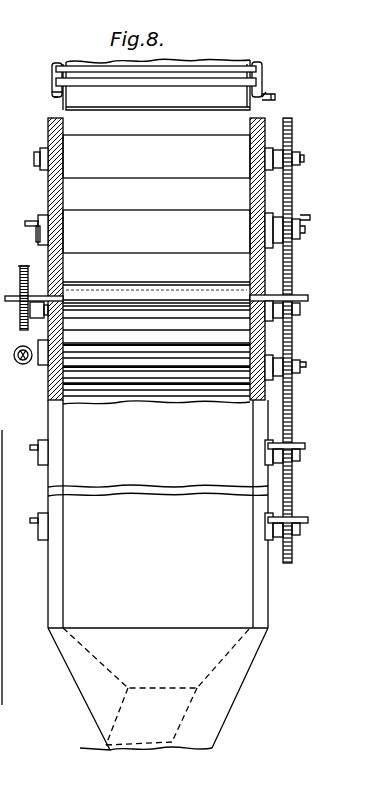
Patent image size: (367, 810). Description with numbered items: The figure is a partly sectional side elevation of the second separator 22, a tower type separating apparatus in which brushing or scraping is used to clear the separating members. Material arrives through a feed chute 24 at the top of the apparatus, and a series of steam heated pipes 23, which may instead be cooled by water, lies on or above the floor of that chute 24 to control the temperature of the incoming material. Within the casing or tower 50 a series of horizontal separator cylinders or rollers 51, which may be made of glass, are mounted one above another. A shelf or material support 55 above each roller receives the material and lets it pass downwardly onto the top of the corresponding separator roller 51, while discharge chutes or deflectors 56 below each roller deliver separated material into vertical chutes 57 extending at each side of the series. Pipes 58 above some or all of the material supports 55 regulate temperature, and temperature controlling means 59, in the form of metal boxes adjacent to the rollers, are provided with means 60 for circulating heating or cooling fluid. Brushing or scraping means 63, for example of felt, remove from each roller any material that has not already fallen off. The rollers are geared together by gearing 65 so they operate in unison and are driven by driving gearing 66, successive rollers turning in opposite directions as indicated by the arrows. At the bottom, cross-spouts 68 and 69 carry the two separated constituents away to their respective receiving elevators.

The second separator 22 is at (270, 200).
The steam heated pipes 23 is at (214, 86).
The chute 24 is at (252, 99).
The casing or tower 50 is at (268, 348).
The separator cylinders or rollers 51 is at (145, 140).
The shelf or material support 55 is at (178, 282).
The discharge chutes or deflectors 56 is at (166, 412).
The vertical chutes 57 is at (16, 350).
The pipes 58 is at (8, 436).
The temperature controlling means 59 is at (120, 300).
The means for circulating heating or cooling fluid 60 is at (300, 299).
The brushing or scraping means 63 is at (22, 157).
The gearing 65 is at (292, 280).
The driving gearing 66 is at (19, 268).
The cross-spout 68 is at (98, 680).
The cross-spout 69 is at (84, 732).